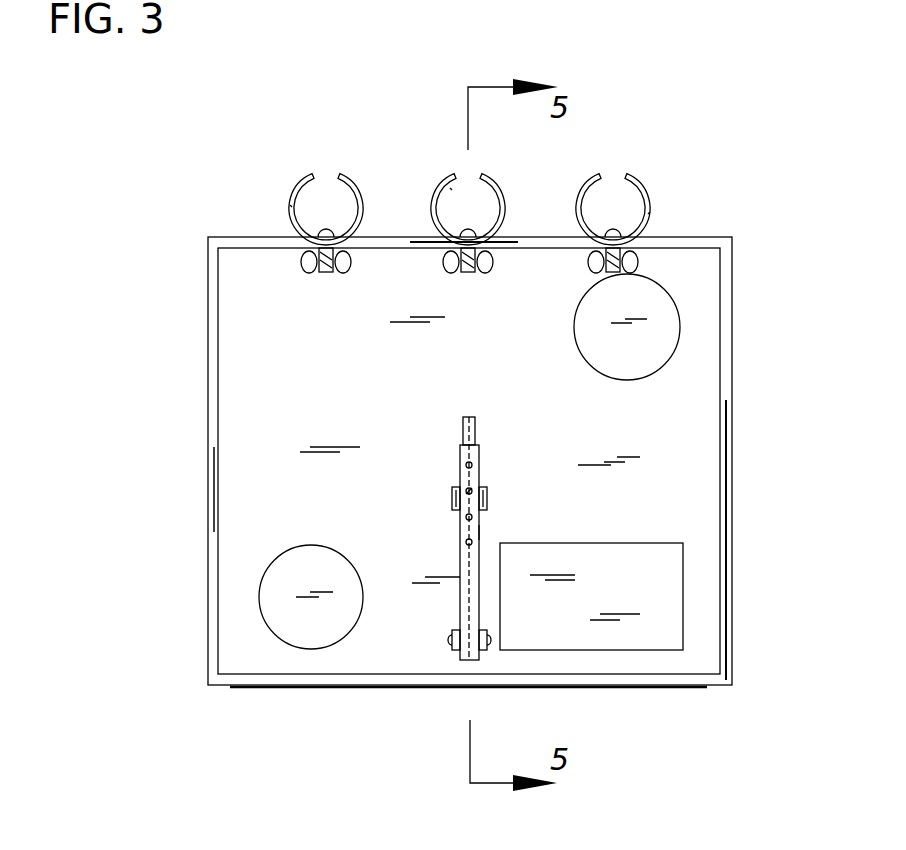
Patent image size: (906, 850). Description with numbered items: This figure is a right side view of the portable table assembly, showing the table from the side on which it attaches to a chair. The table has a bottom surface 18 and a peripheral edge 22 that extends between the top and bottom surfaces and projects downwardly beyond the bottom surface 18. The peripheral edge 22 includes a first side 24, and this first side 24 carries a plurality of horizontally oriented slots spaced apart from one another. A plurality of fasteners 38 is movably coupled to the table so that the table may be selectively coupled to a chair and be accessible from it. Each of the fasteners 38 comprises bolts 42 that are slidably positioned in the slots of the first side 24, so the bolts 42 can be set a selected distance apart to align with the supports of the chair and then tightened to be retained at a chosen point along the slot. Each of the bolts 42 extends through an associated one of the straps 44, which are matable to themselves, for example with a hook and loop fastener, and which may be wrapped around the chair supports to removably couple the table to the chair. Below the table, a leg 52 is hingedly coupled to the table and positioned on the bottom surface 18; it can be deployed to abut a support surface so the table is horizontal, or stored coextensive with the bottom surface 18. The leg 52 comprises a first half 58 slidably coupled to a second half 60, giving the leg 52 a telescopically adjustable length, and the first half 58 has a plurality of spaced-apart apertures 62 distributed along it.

The bottom surface 18 is at (270, 358).
The peripheral edge 22 is at (260, 238).
The first side 24 is at (383, 235).
The fasteners 38 is at (343, 172).
The bolts 42 is at (325, 232).
The straps 44 is at (290, 205).
The leg 52 is at (475, 532).
The first half 58 is at (450, 545).
The second half 60 is at (450, 427).
The apertures 62 is at (466, 517).